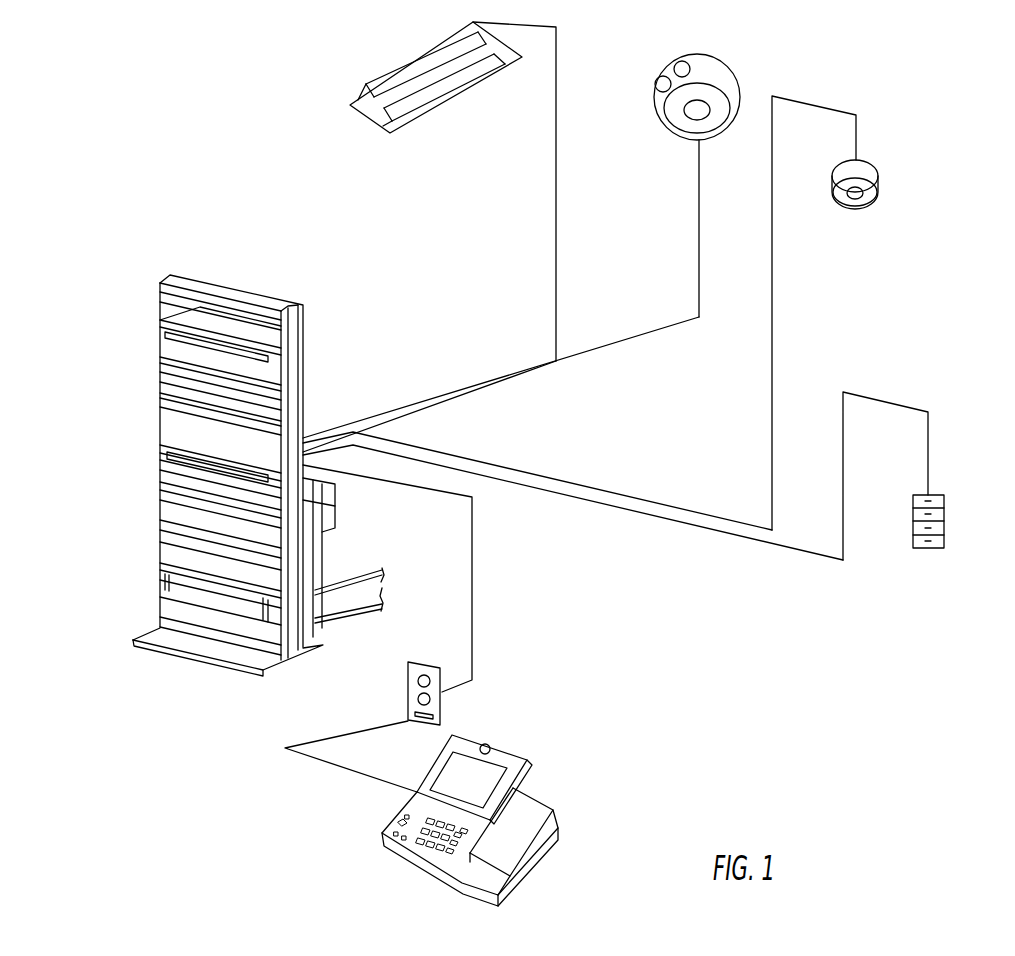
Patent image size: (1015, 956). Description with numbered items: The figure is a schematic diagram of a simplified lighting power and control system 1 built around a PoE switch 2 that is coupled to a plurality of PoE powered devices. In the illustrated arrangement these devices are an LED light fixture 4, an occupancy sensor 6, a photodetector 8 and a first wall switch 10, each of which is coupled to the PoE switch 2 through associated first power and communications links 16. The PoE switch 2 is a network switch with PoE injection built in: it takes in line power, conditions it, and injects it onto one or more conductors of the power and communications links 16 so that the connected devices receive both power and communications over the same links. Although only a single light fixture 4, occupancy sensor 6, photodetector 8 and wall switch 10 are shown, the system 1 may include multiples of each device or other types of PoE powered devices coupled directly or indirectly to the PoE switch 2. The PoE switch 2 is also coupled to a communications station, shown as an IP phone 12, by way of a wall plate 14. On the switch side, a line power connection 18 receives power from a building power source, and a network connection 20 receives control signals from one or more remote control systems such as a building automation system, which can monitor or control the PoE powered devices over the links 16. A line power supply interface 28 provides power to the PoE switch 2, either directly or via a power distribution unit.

The lighting power and control system 1 is at (277, 181).
The PoE switch 2 is at (158, 490).
The LED light fixture 4 is at (391, 68).
The occupancy sensor 6 is at (675, 58).
The photodetector 8 is at (877, 197).
The first wall switch 10 is at (944, 542).
The IP phone 12 is at (582, 795).
The wall plate 14 is at (425, 664).
The first power and communications links 16 is at (483, 523).
The line power connection 18 is at (347, 626).
The network connection 20 is at (351, 588).
The line power supply interface 28 is at (190, 582).